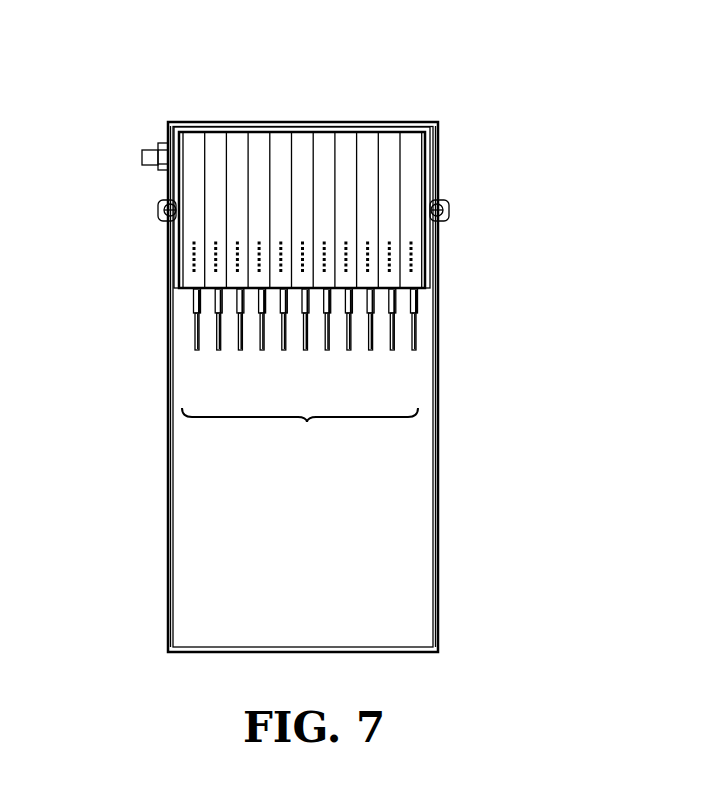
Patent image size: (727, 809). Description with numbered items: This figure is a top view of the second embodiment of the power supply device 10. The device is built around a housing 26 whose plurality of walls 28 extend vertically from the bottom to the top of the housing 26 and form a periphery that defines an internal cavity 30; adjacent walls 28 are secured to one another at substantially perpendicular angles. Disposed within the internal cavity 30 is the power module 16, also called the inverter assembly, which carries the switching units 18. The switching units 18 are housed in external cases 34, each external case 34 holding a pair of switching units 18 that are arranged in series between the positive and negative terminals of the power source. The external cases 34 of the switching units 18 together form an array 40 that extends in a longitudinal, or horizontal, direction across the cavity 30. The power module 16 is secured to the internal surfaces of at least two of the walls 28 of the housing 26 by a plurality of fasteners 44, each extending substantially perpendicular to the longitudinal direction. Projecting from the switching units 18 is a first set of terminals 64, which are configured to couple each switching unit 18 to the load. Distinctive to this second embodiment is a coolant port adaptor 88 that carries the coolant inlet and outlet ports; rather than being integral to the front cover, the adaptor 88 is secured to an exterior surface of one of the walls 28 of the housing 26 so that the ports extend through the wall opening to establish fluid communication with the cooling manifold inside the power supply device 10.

The power supply device 10 is at (500, 90).
The power module 16 is at (412, 364).
The switching units 18 is at (216, 145).
The external cases 34 is at (348, 145).
The housing 26 is at (445, 590).
The walls 28 is at (170, 440).
The internal cavity 30 is at (312, 556).
The array 40 is at (305, 425).
The fasteners 44 is at (163, 205).
The first set of terminals 64 is at (392, 350).
The coolant port adaptor 88 is at (150, 137).